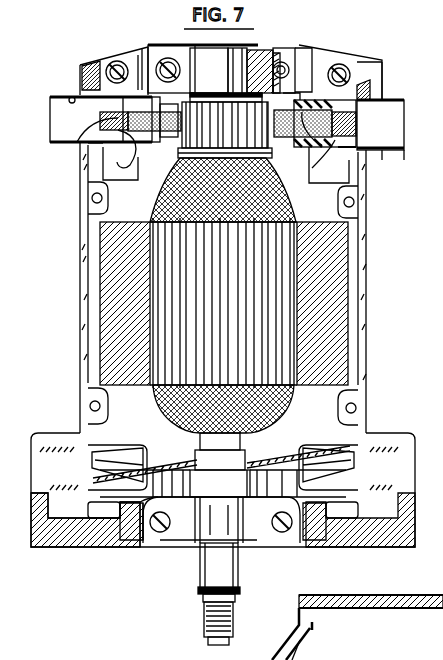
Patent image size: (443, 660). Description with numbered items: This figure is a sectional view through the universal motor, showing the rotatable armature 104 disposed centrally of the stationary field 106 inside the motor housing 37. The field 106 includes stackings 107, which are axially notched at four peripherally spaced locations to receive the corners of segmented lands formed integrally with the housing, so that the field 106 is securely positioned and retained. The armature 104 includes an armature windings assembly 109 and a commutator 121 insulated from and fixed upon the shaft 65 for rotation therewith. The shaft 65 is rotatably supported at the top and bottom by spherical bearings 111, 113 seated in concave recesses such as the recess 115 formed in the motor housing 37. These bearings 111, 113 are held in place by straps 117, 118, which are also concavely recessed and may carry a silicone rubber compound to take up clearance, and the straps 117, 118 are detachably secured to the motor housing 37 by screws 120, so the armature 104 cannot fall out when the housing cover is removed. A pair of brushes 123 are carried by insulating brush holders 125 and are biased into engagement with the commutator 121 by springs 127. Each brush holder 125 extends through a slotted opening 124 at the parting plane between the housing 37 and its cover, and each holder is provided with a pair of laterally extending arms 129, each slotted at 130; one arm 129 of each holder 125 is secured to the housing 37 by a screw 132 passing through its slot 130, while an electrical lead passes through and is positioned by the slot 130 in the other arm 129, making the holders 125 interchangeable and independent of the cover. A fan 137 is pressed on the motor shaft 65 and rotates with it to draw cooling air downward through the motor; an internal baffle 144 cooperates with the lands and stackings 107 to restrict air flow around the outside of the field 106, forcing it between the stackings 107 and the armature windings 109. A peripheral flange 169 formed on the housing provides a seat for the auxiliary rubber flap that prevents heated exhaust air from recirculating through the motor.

The motor housing 37 is at (366, 295).
The motor shaft 65 is at (243, 55).
The armature 104 is at (115, 233).
The field 106 is at (137, 388).
The stackings 107 is at (333, 255).
The armature windings assembly 109 is at (293, 212).
The spherical bearing 111 is at (280, 84).
The spherical bearing 113 is at (242, 487).
The concave recess 115 is at (279, 55).
The strap 117 is at (203, 65).
The strap 118 is at (240, 520).
The screws 120 is at (164, 60).
The commutator 121 is at (283, 90).
The brushes 123 is at (152, 145).
The slotted opening 124 is at (74, 97).
The brush holders 125 is at (68, 112).
The springs 127 is at (100, 128).
The arms 129 is at (138, 68).
The slot 130 is at (368, 130).
The screw 132 is at (116, 60).
The fan 137 is at (366, 434).
The baffle 144 is at (268, 487).
The peripheral flange 169 is at (431, 359).